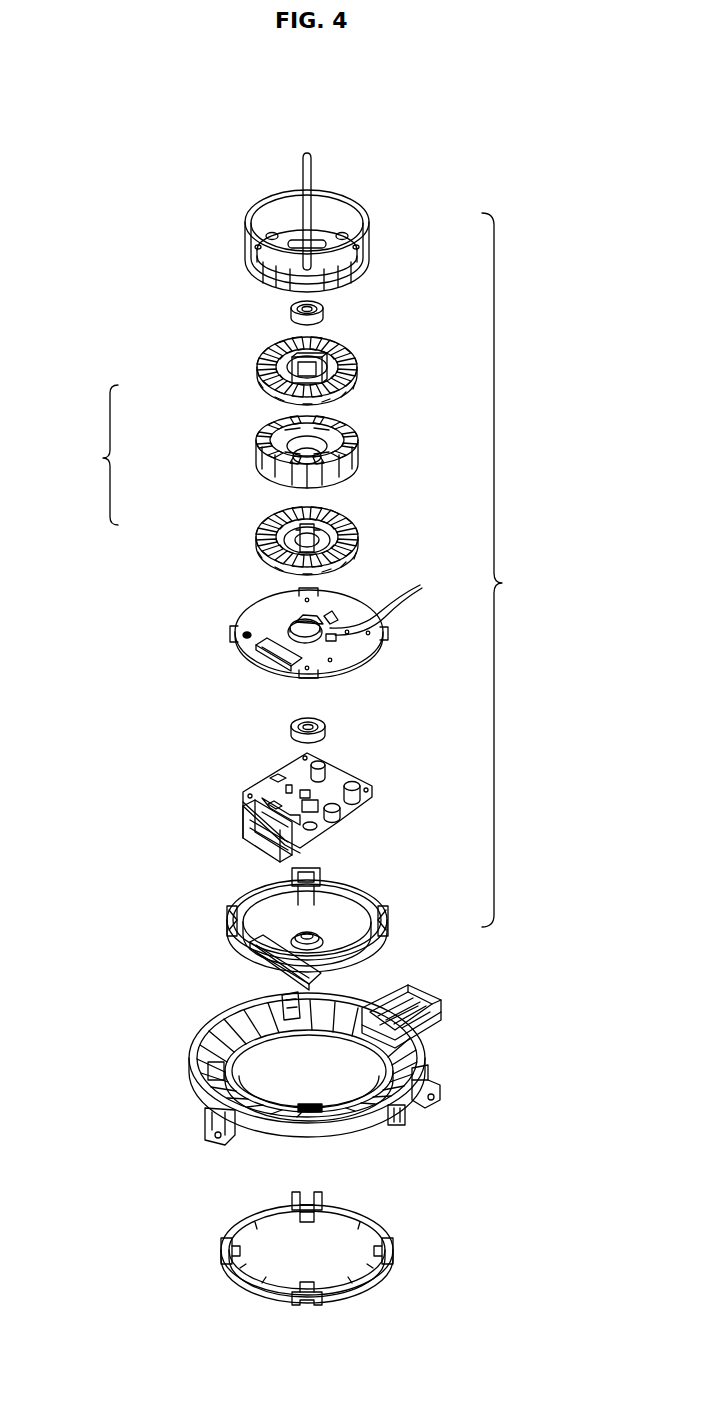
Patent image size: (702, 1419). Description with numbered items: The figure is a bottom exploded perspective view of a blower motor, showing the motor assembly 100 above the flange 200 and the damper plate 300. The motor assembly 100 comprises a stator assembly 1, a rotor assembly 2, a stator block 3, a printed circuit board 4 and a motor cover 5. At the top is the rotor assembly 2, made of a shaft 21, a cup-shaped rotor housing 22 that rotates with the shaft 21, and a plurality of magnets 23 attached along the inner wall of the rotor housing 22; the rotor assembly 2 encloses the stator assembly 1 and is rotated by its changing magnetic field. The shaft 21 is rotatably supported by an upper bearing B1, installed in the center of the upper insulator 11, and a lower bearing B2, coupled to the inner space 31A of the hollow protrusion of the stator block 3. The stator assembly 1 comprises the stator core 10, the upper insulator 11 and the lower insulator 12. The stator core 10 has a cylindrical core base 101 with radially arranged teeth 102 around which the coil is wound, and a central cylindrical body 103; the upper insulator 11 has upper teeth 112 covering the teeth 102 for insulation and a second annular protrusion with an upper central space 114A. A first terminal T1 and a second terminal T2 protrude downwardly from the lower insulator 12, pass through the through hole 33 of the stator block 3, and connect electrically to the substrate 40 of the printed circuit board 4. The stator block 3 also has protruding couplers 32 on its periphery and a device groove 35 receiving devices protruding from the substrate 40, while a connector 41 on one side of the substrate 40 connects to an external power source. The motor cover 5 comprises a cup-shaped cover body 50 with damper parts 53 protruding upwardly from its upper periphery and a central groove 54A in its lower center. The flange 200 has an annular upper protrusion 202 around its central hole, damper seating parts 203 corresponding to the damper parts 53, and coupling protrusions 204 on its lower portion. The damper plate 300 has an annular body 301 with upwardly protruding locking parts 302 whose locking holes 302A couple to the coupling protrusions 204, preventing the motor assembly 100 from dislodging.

The motor assembly 100 is at (516, 570).
The stator assembly 1 is at (93, 455).
The rotor assembly 2 is at (270, 218).
The shaft 21 is at (312, 177).
The rotor housing 22 is at (352, 218).
The magnets 23 is at (345, 275).
The upper bearing B1 is at (290, 310).
The upper insulator 11 is at (274, 366).
The upper teeth 112 is at (275, 353).
The upper central space 114A is at (320, 364).
The stator core 10 is at (285, 458).
The core base 101 is at (278, 462).
The teeth 102 is at (345, 438).
The central cylindrical body 103 is at (352, 455).
The lower insulator 12 is at (269, 539).
The first terminal T1 is at (340, 525).
The second terminal T2 is at (280, 552).
The stator block 3 is at (278, 632).
The inner space 31A is at (310, 635).
The protruding coupler 32 is at (312, 590).
The through hole 33 is at (346, 630).
The device groove 35 is at (272, 654).
The lower bearing B2 is at (292, 733).
The printed circuit board 4 is at (255, 798).
The substrate 40 is at (330, 750).
The connector 41 is at (248, 830).
The motor cover 5 is at (280, 906).
The cover body 50 is at (328, 875).
The damper part 53 is at (312, 860).
The central groove 54A is at (335, 940).
The flange 200 is at (299, 1050).
The upper protrusion 202 is at (405, 998).
The damper seating part 203 is at (212, 1090).
The coupling protrusion 204 is at (300, 1010).
The damper plate 300 is at (283, 1227).
The annular body 301 is at (330, 1208).
The locking part 302 is at (312, 1200).
The locking hole 302A is at (306, 1205).